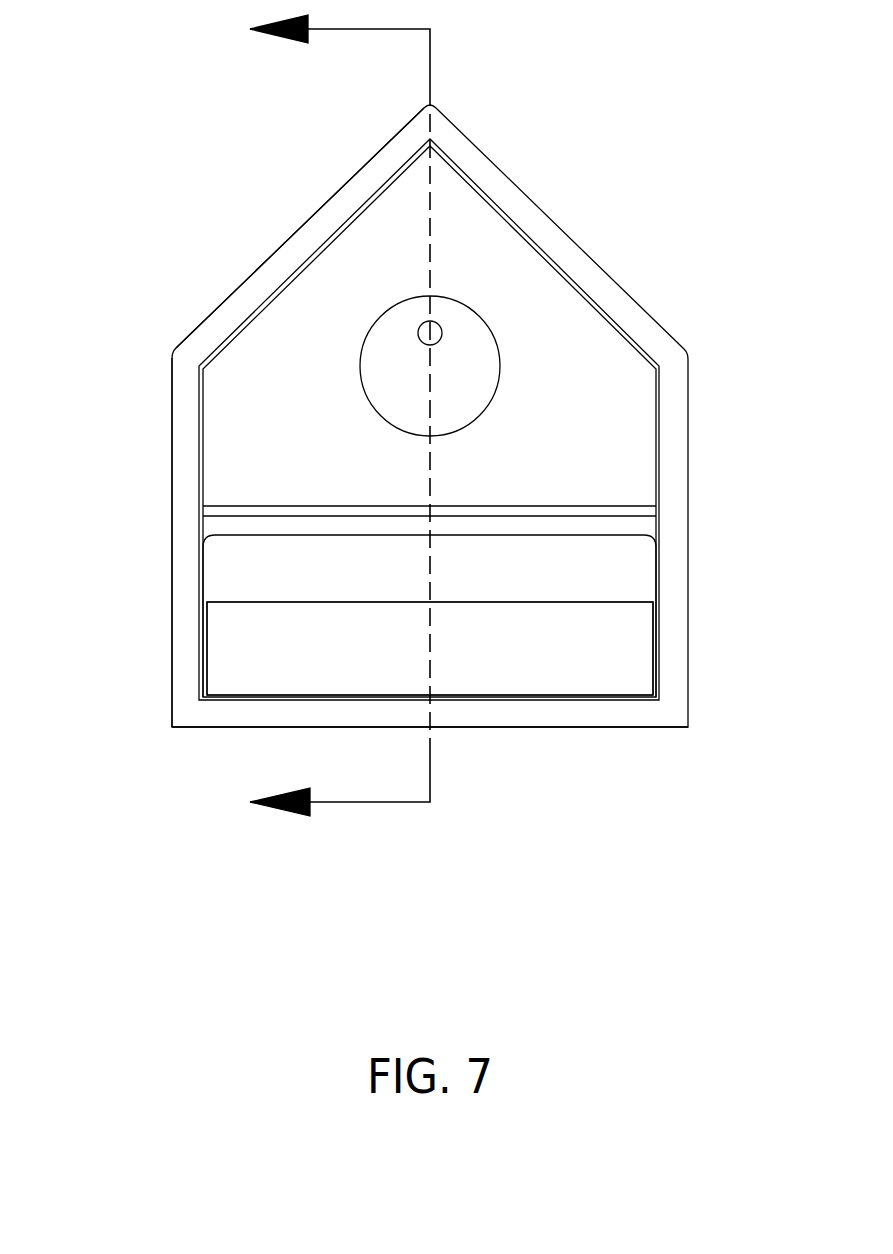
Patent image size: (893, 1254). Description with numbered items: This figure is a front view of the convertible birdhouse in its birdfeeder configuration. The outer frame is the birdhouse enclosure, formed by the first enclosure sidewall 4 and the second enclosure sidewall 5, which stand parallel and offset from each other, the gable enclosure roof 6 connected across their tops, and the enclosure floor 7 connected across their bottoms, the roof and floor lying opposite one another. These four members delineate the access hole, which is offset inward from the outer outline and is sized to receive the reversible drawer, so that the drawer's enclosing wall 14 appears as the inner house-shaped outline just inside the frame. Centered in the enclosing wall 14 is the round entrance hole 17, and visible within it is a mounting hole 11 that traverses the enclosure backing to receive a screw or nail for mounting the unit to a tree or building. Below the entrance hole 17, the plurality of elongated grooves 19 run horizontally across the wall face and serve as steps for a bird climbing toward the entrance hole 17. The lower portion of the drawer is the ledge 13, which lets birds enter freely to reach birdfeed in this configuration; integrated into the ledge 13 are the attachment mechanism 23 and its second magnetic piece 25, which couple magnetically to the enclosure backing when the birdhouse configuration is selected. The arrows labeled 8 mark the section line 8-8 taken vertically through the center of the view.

The first enclosure sidewall 4 is at (680, 425).
The second enclosure sidewall 5 is at (181, 428).
The gable enclosure roof 6 is at (302, 241).
The enclosure floor 7 is at (521, 718).
The section line 8- 8 is at (325, 418).
The mounting hole 11 is at (439, 328).
The ledge 13 is at (213, 578).
The enclosing wall 14 is at (571, 312).
The entrance hole 17 is at (389, 405).
The plurality of elongated grooves 19 is at (664, 511).
The attachment mechanism 23 is at (215, 648).
The second magnetic piece 25 is at (430, 648).